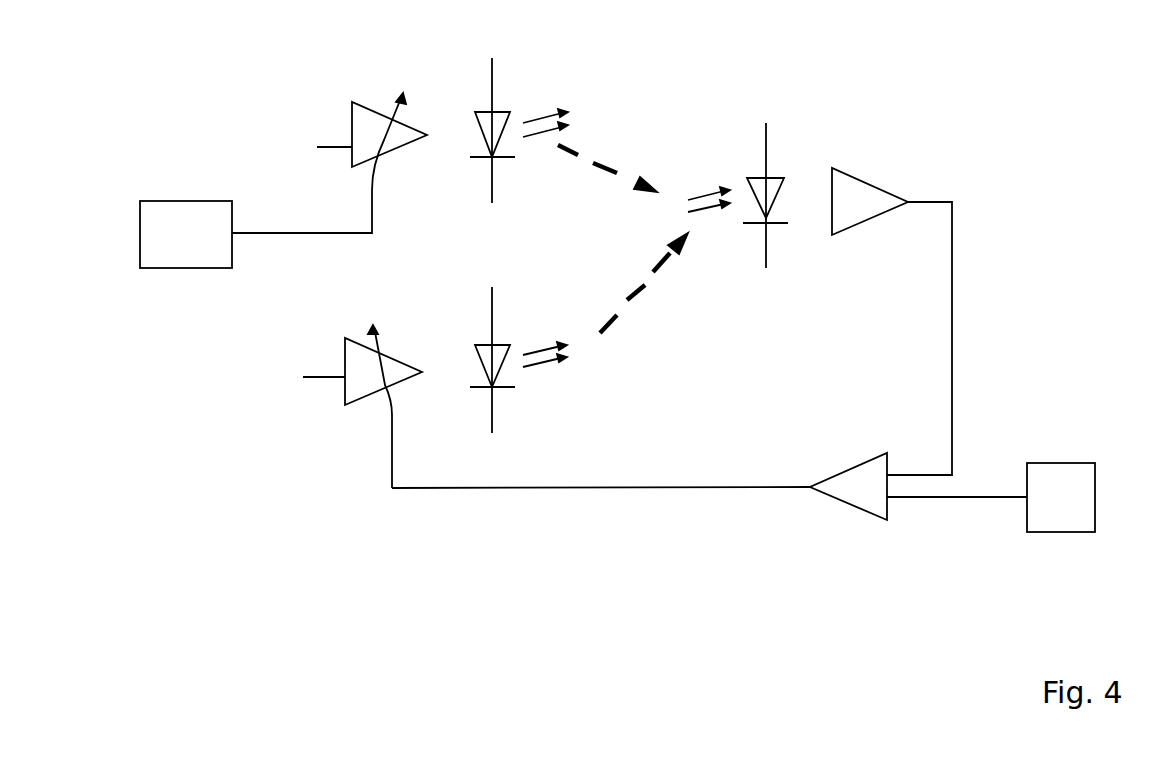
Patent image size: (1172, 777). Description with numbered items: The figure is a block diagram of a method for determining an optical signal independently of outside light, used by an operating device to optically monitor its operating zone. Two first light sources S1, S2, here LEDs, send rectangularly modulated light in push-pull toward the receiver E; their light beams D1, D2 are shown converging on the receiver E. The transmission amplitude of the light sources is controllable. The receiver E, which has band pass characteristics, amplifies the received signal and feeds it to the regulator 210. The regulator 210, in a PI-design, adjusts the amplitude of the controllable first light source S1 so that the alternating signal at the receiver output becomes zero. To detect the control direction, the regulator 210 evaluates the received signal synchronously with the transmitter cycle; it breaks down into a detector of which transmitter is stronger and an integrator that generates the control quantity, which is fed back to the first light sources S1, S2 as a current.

The first light source S1 is at (519, 123).
The first light source S2 is at (518, 370).
The receiver E is at (738, 181).
The first light beam D1 is at (607, 160).
The second light beam D2 is at (644, 283).
The regulator 210 is at (844, 496).